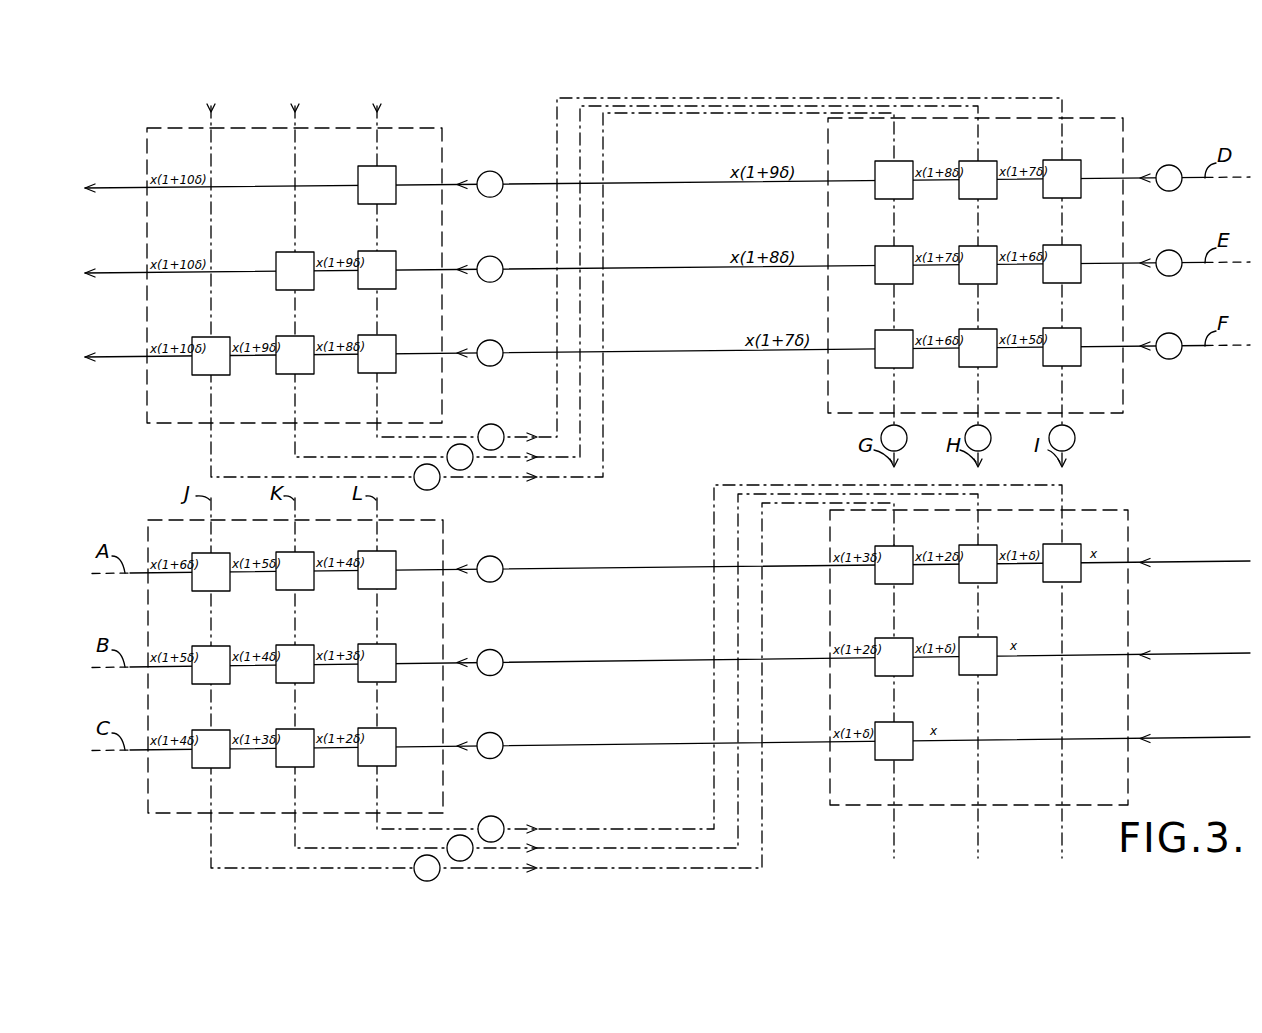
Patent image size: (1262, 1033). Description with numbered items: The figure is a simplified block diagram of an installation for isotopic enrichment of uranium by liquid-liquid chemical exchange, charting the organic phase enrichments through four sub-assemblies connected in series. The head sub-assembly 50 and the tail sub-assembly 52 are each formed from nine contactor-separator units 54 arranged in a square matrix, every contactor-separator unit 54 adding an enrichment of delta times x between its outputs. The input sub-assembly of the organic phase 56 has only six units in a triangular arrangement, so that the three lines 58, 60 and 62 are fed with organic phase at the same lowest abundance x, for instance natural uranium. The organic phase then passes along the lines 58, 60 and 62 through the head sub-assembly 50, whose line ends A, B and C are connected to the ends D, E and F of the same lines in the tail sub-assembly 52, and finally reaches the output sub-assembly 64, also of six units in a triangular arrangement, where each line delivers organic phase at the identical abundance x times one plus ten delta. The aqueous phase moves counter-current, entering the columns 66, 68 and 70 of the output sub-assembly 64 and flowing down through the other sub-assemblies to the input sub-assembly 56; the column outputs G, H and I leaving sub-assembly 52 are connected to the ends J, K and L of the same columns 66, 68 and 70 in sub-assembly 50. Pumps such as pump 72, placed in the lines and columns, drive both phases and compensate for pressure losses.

The sub-assembly 50 is at (453, 537).
The sub-assembly 52 is at (1134, 146).
The contactor-separator unit 54 is at (295, 664).
The input sub-assembly of the organic phase 56 is at (1139, 535).
The line 58 is at (1206, 562).
The line 60 is at (1206, 655).
The line 62 is at (1206, 739).
The output sub-assembly 64 is at (452, 147).
The column 66 is at (209, 120).
The column 68 is at (292, 120).
The column 70 is at (374, 120).
The pump 72 is at (490, 353).